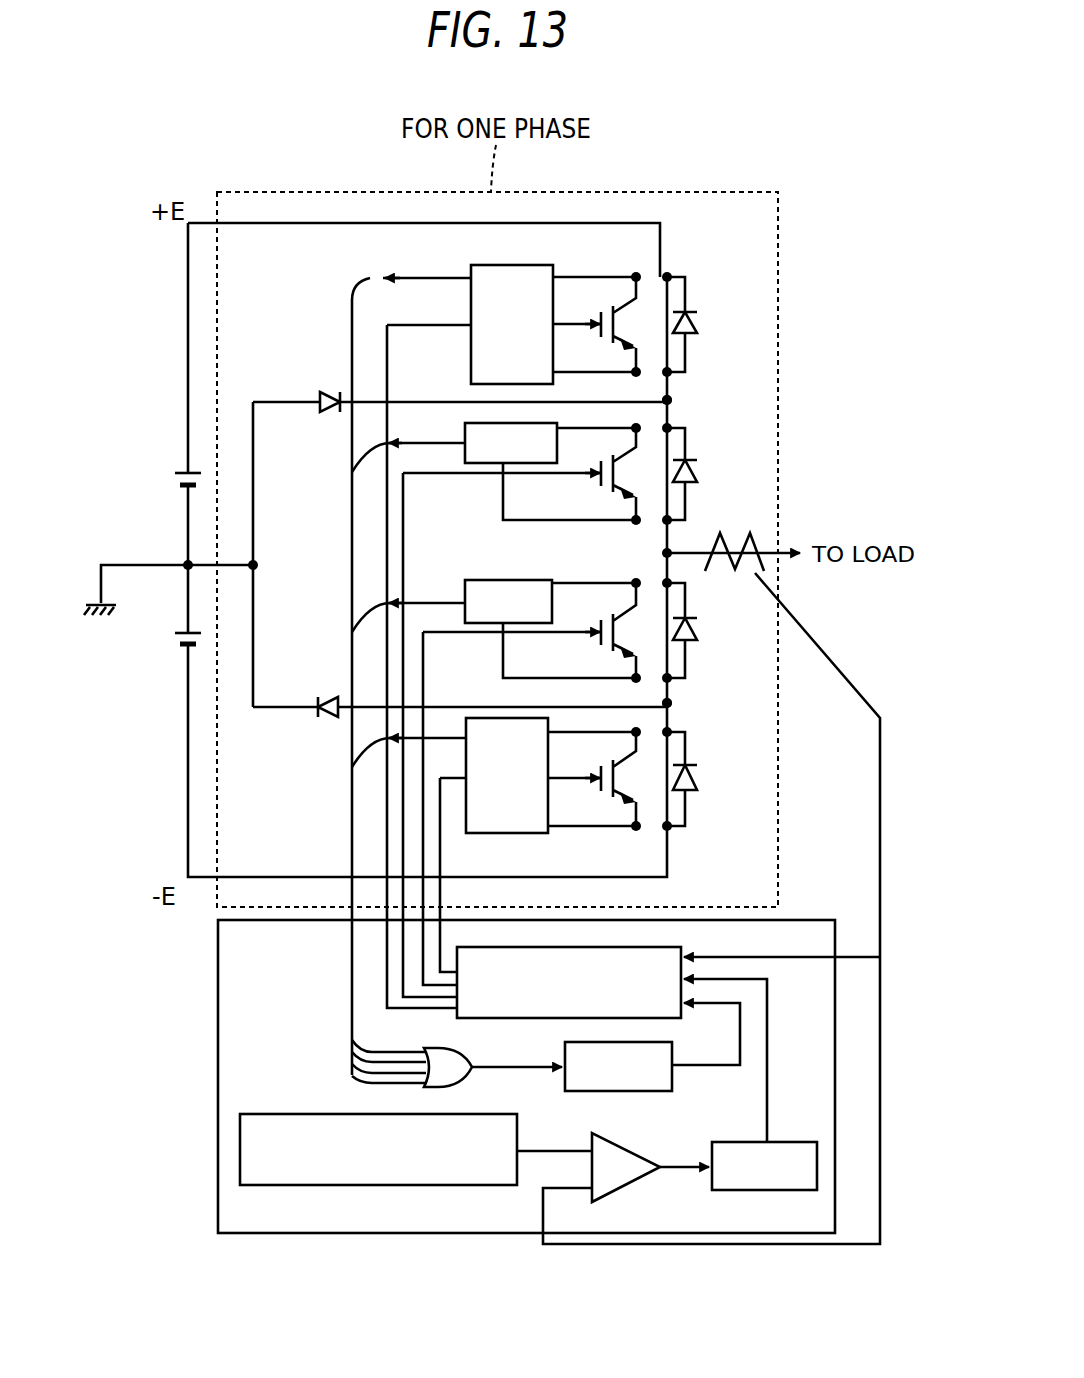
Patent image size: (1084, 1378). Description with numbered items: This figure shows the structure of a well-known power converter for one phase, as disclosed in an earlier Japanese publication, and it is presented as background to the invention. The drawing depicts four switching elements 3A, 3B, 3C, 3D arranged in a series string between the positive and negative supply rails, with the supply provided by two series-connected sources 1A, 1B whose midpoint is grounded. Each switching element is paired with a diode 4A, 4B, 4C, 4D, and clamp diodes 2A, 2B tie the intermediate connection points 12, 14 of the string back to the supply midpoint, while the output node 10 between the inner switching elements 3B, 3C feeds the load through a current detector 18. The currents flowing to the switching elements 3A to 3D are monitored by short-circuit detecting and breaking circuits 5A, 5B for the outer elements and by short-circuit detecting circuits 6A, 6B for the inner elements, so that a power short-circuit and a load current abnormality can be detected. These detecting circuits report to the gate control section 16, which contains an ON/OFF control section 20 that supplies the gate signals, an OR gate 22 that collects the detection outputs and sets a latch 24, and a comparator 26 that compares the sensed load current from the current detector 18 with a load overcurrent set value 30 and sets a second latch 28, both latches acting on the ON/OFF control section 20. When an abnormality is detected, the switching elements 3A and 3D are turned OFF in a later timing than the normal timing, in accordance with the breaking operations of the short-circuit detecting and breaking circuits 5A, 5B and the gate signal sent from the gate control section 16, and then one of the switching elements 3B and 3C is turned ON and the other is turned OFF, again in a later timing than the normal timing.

The DC power source (upper) 1A is at (176, 490).
The DC power source (lower) 1B is at (176, 652).
The clamp diode 2A is at (332, 412).
The clamp diode 2B is at (326, 717).
The switching element 3A is at (610, 308).
The switching element 3B is at (602, 490).
The switching element 3C is at (604, 616).
The switching element 3D is at (598, 806).
The freewheeling diode 4A is at (698, 322).
The freewheeling diode 4B is at (698, 470).
The freewheeling diode 4C is at (698, 632).
The freewheeling diode 4D is at (700, 776).
The short-circuit detecting and breaking circuit 5A is at (471, 362).
The short-circuit detecting and breaking circuit 5B is at (480, 718).
The short-circuit detecting circuit 6A is at (470, 432).
The short-circuit detecting circuit 6B is at (480, 582).
The AC output terminal 10 is at (672, 552).
The intermediate connection point 12 is at (672, 399).
The intermediate connection point 14 is at (672, 703).
The gate control section 16 is at (218, 1078).
The current detector 18 is at (762, 541).
The ON/OFF control section 20 is at (466, 1018).
The OR gate 22 is at (468, 1074).
The latch circuit 24 is at (620, 1042).
The comparator 26 is at (640, 1152).
The latch circuit 28 is at (792, 1142).
The load overcurrent set value 30 is at (280, 1114).